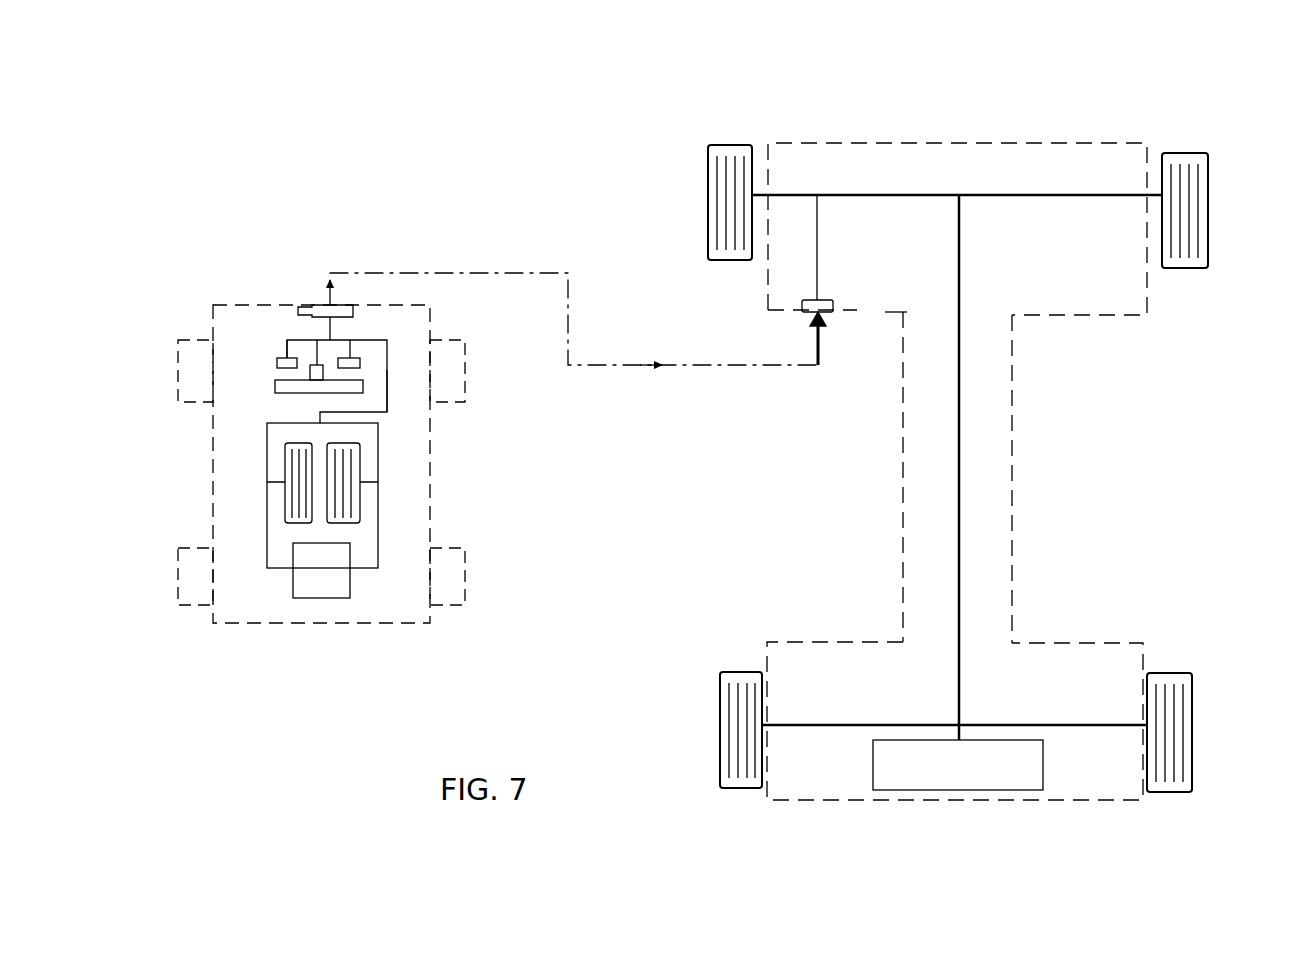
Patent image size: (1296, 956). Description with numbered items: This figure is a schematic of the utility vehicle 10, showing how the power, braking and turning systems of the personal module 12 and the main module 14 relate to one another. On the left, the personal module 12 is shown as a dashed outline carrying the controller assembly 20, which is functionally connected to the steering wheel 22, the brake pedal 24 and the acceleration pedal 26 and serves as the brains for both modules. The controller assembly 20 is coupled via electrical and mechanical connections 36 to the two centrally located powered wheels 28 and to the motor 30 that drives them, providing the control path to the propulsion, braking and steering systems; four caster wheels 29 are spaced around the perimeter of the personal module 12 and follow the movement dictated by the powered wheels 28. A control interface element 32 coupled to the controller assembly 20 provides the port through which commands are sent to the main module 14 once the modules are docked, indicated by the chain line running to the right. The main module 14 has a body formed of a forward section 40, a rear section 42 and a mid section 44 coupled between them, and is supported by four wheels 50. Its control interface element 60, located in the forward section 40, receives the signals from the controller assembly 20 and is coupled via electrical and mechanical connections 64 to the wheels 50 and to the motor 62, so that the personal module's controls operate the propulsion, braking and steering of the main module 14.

The utility vehicle 10 is at (220, 92).
The personal module 12 is at (210, 302).
The main module 14 is at (1124, 126).
The controller assembly 20 is at (300, 338).
The steering wheel 22 is at (275, 390).
The brake pedal 24 is at (277, 362).
The acceleration pedal 26 is at (362, 363).
The powered wheels 28 is at (310, 523).
The caster wheels 29 is at (160, 332).
The motor 30 is at (320, 600).
The control interface element 32 is at (307, 305).
The electrical and mechanical connections 36 is at (387, 392).
The forward section 40 is at (922, 138).
The rear section 42 is at (1127, 660).
The mid section 44 is at (1000, 505).
The wheels 50 is at (708, 147).
The control interface element 60 is at (833, 305).
The motor 62 is at (990, 772).
The electrical and mechanical connections 64 is at (873, 195).